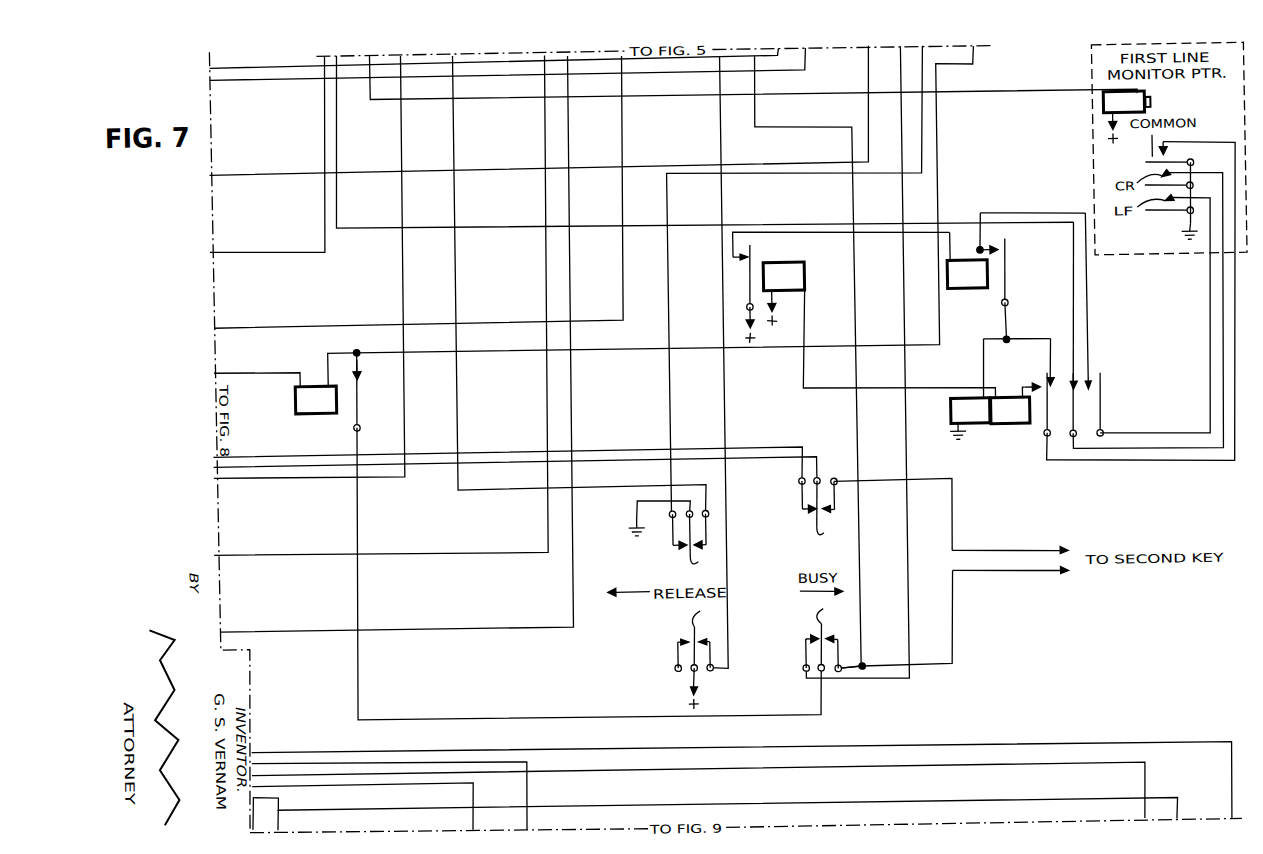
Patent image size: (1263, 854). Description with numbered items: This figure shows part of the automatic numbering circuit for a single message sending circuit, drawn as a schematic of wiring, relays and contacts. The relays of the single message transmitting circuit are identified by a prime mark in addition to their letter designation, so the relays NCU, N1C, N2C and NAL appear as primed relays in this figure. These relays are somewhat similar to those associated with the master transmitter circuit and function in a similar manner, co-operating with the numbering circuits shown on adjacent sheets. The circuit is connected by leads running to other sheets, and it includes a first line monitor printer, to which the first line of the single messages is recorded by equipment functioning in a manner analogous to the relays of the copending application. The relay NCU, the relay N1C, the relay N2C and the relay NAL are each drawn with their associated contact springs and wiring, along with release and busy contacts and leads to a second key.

The NCU' relay NCU is at (864, 315).
The N1C' relay N1C is at (1018, 304).
The N2C' relay N2C is at (1093, 302).
The NAL' relay NAL is at (315, 400).